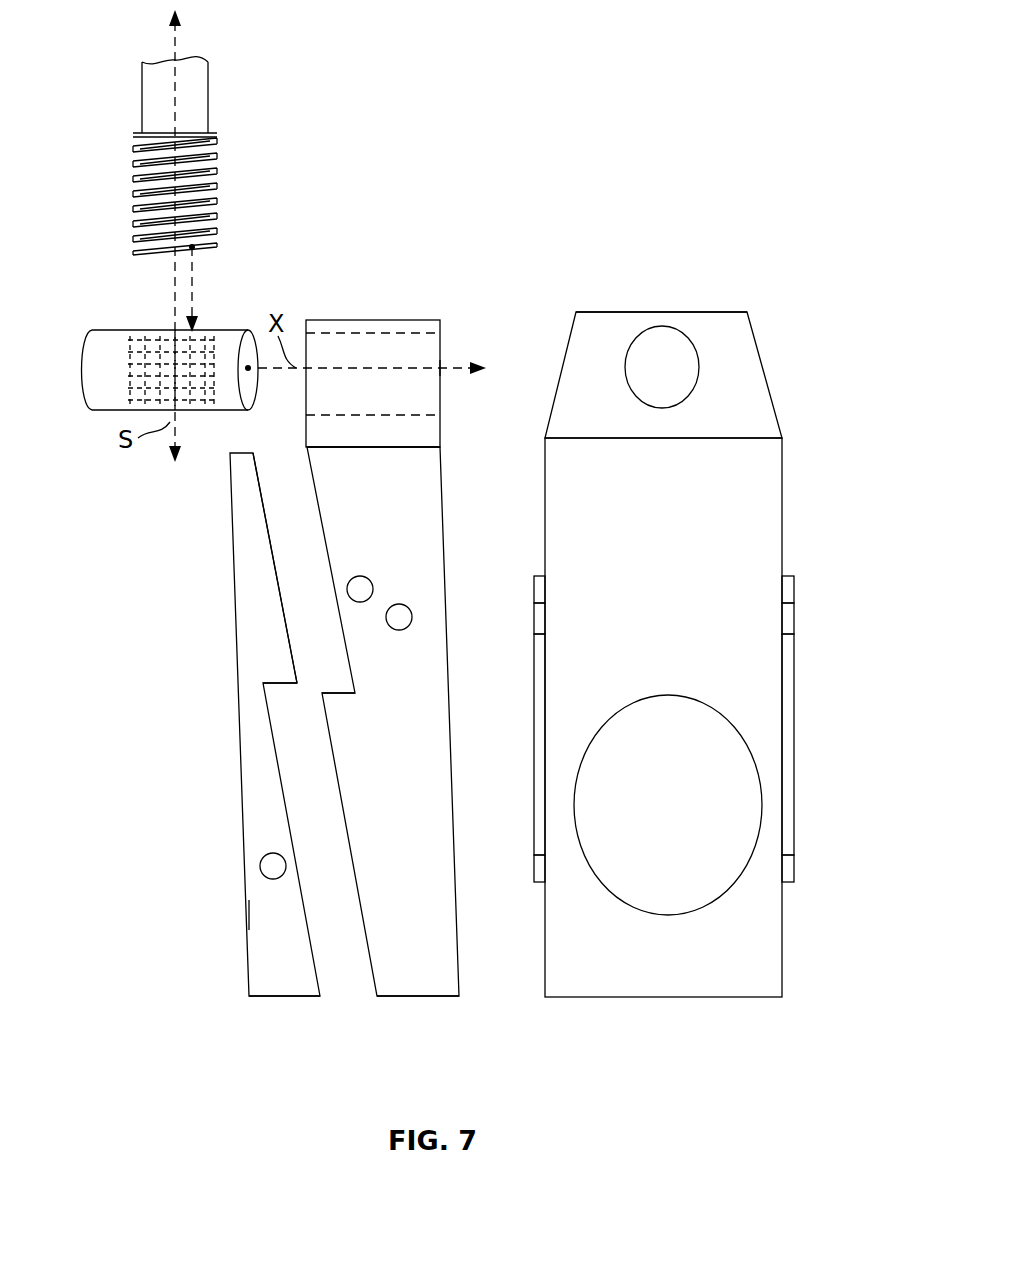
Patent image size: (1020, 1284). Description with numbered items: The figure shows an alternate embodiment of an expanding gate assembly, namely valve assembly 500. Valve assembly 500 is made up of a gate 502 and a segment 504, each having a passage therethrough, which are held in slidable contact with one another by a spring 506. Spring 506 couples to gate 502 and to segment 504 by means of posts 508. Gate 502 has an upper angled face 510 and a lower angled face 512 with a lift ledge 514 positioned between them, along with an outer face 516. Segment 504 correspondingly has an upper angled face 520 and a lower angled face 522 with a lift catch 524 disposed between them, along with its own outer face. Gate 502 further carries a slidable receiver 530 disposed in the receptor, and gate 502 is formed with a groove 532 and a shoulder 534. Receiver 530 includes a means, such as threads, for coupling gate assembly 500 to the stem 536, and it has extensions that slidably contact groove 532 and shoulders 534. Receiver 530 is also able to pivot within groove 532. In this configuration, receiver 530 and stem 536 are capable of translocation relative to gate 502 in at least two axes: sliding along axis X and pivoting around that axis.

The valve assembly 500 is at (712, 102).
The gate 502 is at (438, 988).
The segment 504 is at (246, 598).
The spring 506 is at (534, 706).
The posts 508 is at (369, 581).
The upper angled face 510 is at (325, 464).
The lower angled face 512 is at (374, 985).
The lift ledge 514 is at (346, 688).
The outer face 516 is at (446, 518).
The upper angled face 520 is at (265, 501).
The lower angled face 522 is at (325, 990).
The lift catch 524 is at (280, 692).
The slidable receiver 530 is at (112, 330).
The groove 532 is at (420, 354).
The shoulder 534 is at (718, 312).
The stem 536 is at (133, 167).